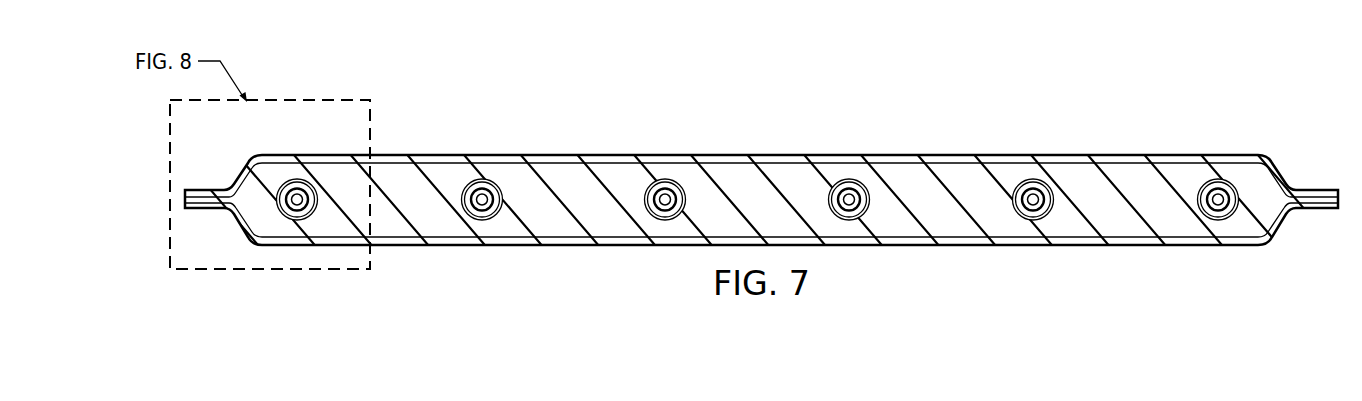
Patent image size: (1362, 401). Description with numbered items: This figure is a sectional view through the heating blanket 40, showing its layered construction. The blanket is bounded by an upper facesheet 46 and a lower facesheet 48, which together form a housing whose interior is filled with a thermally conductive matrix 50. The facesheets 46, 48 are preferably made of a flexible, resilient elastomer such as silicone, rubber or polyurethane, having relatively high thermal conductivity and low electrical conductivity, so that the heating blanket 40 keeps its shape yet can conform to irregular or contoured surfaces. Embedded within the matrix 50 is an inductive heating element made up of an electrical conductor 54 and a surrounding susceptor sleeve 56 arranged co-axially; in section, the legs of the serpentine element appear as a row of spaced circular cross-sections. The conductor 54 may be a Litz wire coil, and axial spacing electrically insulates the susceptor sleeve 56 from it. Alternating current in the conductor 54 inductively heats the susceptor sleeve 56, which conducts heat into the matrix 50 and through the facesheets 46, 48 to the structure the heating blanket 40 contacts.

The heating blanket 40 is at (858, 104).
The upper facesheet 46 is at (773, 160).
The lower facesheet 48 is at (440, 240).
The thermally conductive matrix 50 is at (943, 172).
The electrical conductor 54 is at (482, 200).
The susceptor sleeve 56 is at (282, 183).